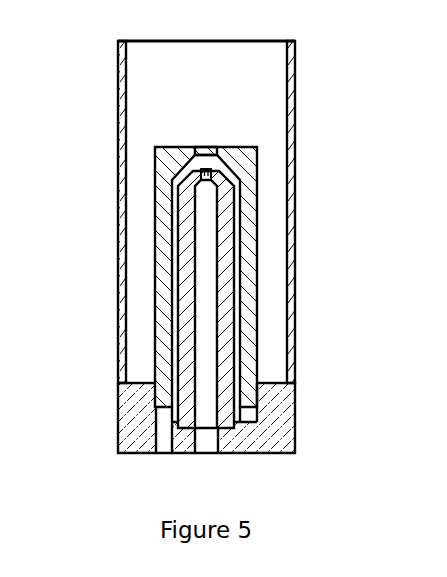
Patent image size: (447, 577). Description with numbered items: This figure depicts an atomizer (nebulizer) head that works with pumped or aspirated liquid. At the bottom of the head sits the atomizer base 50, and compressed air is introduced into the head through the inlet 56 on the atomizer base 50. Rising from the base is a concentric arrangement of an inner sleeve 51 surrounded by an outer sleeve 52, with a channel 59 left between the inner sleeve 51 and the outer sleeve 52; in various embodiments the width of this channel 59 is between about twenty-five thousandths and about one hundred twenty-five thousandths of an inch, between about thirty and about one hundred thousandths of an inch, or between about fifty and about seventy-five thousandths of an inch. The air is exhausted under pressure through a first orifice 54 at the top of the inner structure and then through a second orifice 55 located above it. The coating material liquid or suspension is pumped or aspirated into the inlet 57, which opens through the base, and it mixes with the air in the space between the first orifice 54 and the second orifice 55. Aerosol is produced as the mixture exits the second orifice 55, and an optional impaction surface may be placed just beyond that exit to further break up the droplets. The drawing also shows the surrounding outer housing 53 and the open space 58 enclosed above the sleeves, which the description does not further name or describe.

The atomizer base 50 is at (297, 422).
The inner sleeve 51 is at (233, 210).
The outer sleeve 52 is at (257, 178).
The outer tube 53 is at (115, 214).
The first orifice 54 is at (203, 172).
The second orifice 55 is at (204, 146).
The inlet 56 is at (202, 460).
The inlet 57 is at (157, 453).
The interior chamber 58 is at (240, 58).
The channel 59 is at (175, 333).